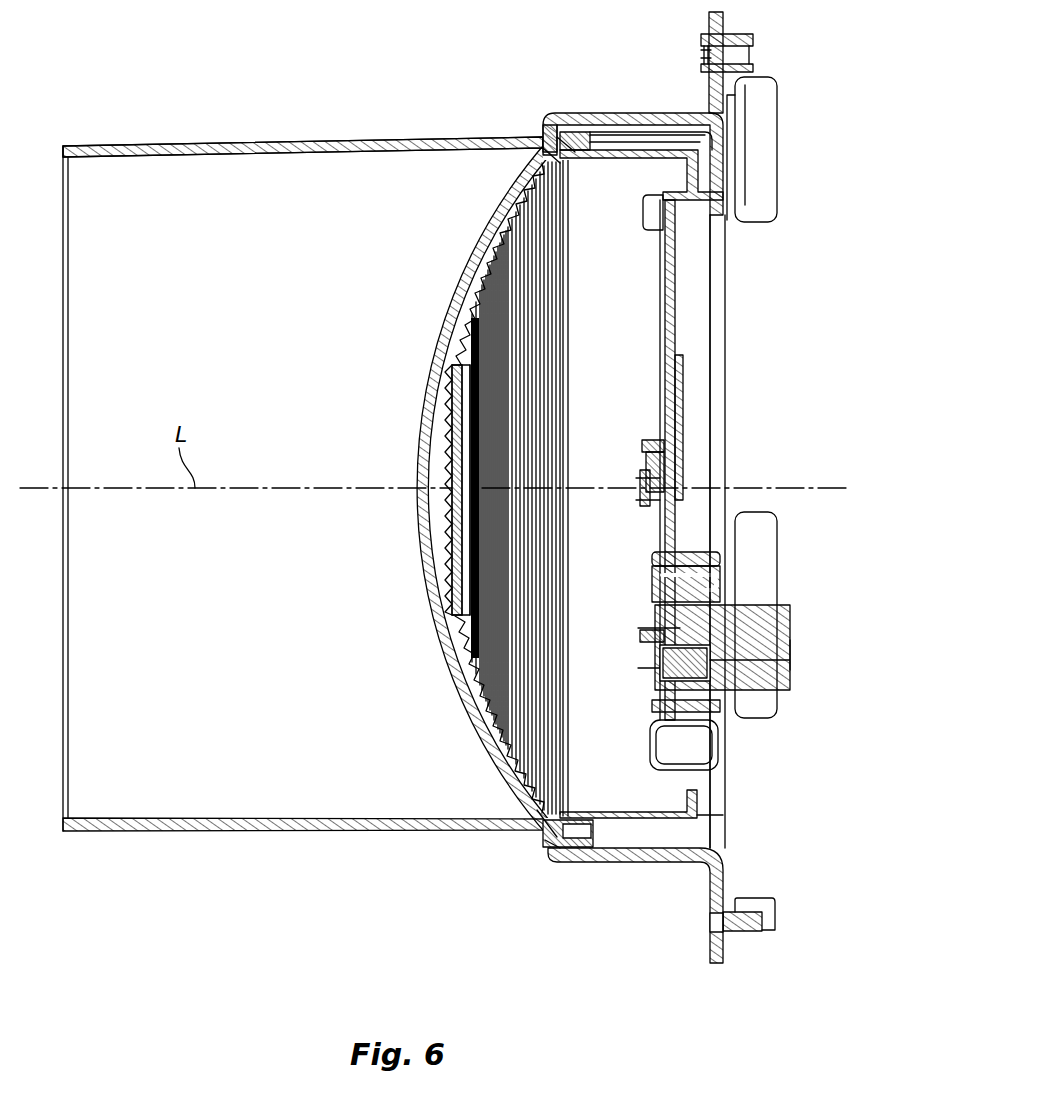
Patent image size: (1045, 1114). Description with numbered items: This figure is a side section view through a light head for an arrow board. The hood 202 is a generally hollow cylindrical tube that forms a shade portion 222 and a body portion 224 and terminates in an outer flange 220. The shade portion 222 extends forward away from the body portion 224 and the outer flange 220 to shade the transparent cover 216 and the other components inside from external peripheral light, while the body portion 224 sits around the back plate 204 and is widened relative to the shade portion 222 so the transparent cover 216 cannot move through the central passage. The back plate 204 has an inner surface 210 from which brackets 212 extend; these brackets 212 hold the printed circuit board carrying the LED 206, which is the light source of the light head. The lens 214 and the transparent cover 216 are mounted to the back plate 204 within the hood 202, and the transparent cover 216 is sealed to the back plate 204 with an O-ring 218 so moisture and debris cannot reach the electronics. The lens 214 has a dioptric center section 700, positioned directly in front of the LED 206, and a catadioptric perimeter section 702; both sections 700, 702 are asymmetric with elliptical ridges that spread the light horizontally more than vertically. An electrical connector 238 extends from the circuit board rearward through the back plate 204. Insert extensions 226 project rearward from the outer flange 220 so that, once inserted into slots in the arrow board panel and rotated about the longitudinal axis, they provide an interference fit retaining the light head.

The hood 202 is at (153, 831).
The back plate 204 is at (693, 308).
The light emitting diode (LED) 206 is at (647, 492).
The inner surface 210 is at (668, 322).
The brackets 212 is at (653, 448).
The lens 214 is at (543, 822).
The transparent cover 216 is at (493, 765).
The O-ring 218 is at (559, 862).
The outer flange 220 is at (710, 945).
The shade portion 222 is at (241, 140).
The body portion 224 is at (633, 113).
The insert extensions 226 is at (771, 160).
The electrical connector 238 is at (783, 655).
The center section 700 is at (448, 490).
The perimeter section 702 is at (475, 690).